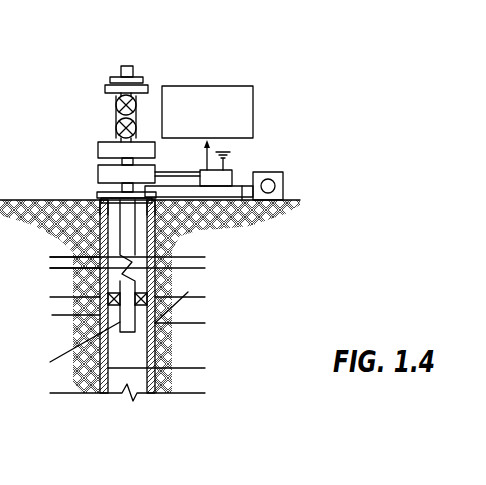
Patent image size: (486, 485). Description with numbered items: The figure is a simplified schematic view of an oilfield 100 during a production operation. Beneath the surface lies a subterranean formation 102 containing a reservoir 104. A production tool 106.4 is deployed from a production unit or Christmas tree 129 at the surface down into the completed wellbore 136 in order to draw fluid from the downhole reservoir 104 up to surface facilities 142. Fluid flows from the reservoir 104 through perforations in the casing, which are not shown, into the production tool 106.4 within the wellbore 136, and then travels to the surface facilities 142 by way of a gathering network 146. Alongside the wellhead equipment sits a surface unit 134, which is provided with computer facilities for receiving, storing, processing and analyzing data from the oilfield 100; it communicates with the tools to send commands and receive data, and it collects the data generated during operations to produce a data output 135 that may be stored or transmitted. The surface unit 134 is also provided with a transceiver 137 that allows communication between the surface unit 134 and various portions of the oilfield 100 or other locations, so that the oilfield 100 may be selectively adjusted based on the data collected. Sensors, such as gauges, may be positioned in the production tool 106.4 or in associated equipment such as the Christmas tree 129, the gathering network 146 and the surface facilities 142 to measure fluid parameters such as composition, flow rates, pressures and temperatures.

The oilfield 100 is at (58, 122).
The Christmas tree 129 is at (128, 65).
The data output 135 is at (233, 86).
The surface unit 134 is at (201, 170).
The transceiver 137 is at (228, 162).
The surface facilities 142 is at (284, 182).
The gathering network 146 is at (242, 200).
The completed wellbore 136 is at (150, 232).
The subterranean formation 102 is at (188, 292).
The production tool 106.4 is at (76, 347).
The reservoir 104 is at (213, 352).